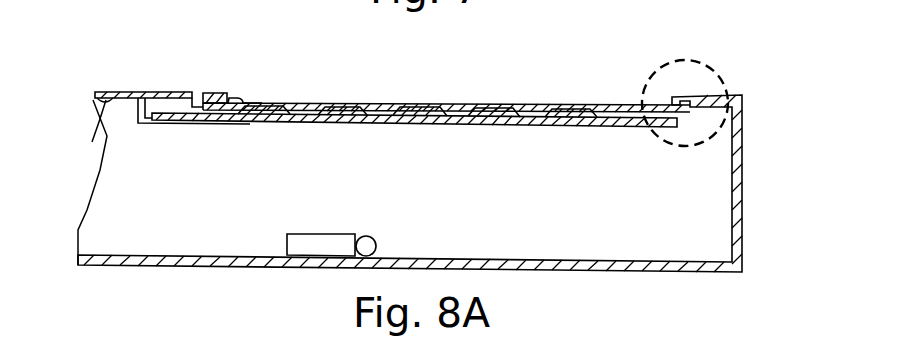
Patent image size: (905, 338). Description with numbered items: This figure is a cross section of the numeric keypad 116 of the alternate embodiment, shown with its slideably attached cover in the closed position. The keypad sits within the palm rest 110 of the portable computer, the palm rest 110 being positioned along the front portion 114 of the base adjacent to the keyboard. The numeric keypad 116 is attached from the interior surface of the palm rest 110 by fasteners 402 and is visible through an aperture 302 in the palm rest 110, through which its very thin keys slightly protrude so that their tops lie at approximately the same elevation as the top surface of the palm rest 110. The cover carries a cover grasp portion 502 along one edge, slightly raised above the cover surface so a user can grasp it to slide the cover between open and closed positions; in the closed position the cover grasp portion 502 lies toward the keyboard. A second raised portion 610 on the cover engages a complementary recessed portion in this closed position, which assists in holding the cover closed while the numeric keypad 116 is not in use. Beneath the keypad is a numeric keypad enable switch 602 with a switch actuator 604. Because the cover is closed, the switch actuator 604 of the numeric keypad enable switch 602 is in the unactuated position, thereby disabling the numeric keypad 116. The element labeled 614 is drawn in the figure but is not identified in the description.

The palm rest 110 is at (99, 91).
The step portion 614 is at (167, 97).
The aperture 302 is at (202, 94).
The cover grasp portion 502 is at (213, 94).
The second raised portion 610 is at (232, 98).
The numeric keypad 116 is at (379, 103).
The front portion 114 is at (742, 128).
The fasteners 402 is at (93, 140).
The numeric keypad enable switch 602 is at (340, 233).
The switch actuator 604 is at (369, 236).